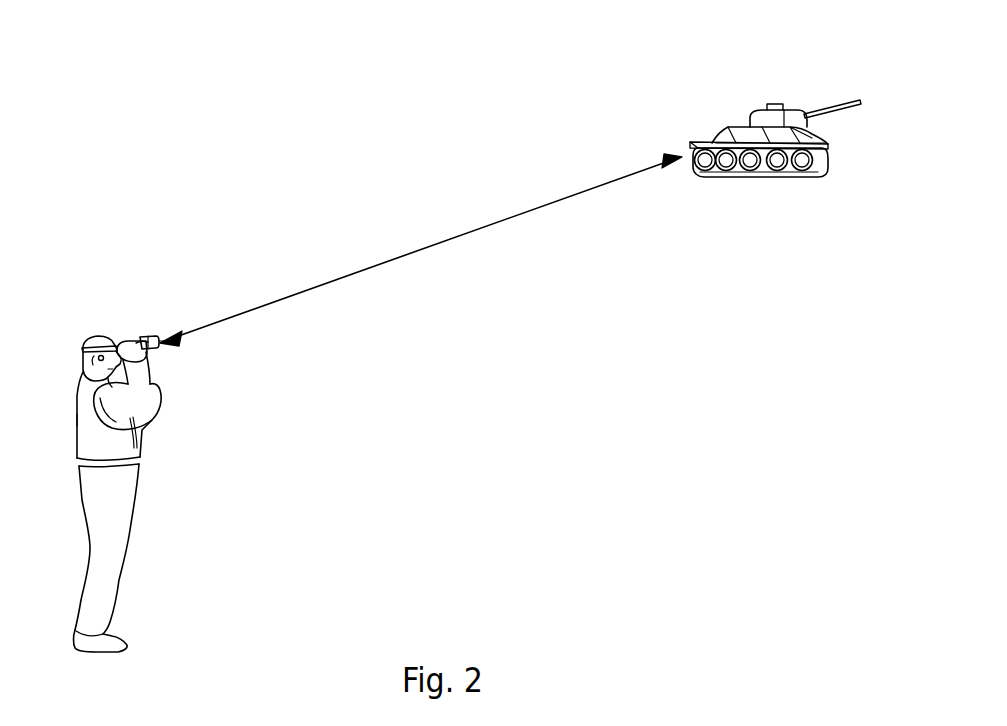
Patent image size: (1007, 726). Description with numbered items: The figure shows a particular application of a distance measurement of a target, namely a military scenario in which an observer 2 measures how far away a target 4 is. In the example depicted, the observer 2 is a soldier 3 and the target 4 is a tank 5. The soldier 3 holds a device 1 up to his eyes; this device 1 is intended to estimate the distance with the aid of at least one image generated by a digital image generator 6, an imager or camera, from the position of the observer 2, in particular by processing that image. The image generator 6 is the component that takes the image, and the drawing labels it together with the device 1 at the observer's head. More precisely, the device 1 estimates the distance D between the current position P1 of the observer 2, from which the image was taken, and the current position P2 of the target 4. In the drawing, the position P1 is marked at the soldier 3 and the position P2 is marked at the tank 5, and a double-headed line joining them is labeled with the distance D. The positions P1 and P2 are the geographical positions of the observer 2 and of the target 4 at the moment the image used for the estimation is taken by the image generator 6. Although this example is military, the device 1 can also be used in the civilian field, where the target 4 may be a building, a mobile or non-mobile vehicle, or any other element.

The device 1 is at (152, 318).
The observer 2 is at (64, 320).
The soldier 3 is at (77, 420).
The target 4 is at (752, 96).
The tank 5 is at (793, 108).
The digital image generator 6 is at (140, 336).
The current position of the observer P1 is at (186, 312).
The current position of the target P2 is at (692, 128).
The distance D is at (377, 265).